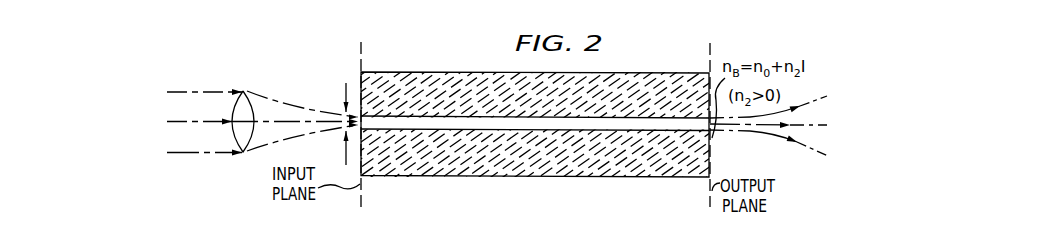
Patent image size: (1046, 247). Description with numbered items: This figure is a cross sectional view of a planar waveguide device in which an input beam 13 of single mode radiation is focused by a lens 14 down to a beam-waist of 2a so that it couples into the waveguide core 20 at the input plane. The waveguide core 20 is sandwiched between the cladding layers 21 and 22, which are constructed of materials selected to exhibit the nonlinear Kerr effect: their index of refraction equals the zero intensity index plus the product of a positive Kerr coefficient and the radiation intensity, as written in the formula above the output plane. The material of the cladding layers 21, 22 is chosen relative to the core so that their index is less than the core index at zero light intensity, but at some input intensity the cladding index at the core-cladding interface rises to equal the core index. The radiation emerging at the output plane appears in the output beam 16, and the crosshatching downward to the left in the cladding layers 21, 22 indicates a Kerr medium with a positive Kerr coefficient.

The input beam 13 is at (177, 148).
The lens 14 is at (249, 106).
The output beam 16 is at (812, 136).
The waveguide core 20 is at (401, 113).
The cladding layer 21 is at (405, 162).
The cladding layer 22 is at (645, 92).
The beam-waist 2a is at (351, 110).